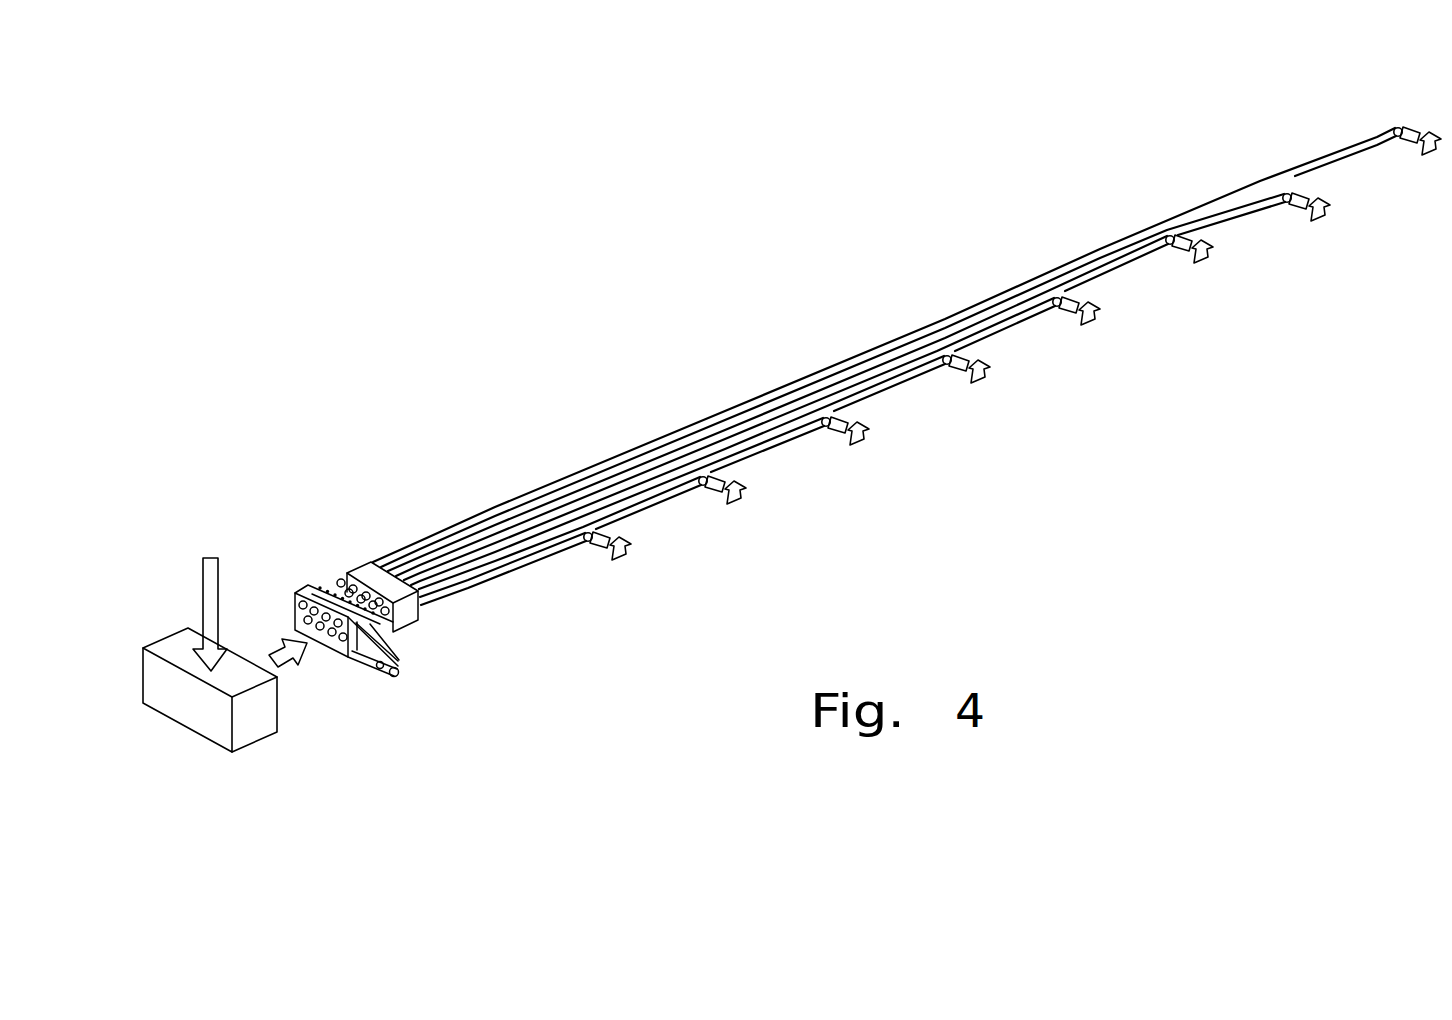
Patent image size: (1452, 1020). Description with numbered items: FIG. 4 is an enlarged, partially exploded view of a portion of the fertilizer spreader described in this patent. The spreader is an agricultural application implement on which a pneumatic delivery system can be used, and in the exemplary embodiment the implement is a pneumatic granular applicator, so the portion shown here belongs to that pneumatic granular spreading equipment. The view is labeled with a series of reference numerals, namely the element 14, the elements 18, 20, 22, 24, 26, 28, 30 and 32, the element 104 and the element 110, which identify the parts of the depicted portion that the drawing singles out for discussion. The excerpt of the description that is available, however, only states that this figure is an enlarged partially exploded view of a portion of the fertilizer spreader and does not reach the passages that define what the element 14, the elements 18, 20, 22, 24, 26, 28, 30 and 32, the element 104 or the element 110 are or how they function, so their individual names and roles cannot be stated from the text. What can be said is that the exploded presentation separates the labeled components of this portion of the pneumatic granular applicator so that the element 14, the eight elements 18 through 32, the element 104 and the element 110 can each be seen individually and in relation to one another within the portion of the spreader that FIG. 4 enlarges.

The cable assembly 14 is at (781, 377).
The connector 18 is at (618, 559).
The connector 20 is at (733, 503).
The connector 22 is at (856, 444).
The connector 24 is at (977, 382).
The connector 26 is at (1087, 324).
The connector 28 is at (1200, 262).
The connector 30 is at (1317, 220).
The connector 32 is at (1434, 137).
The electronic control unit 104 is at (257, 718).
The mounting direction arrow 110 is at (213, 590).